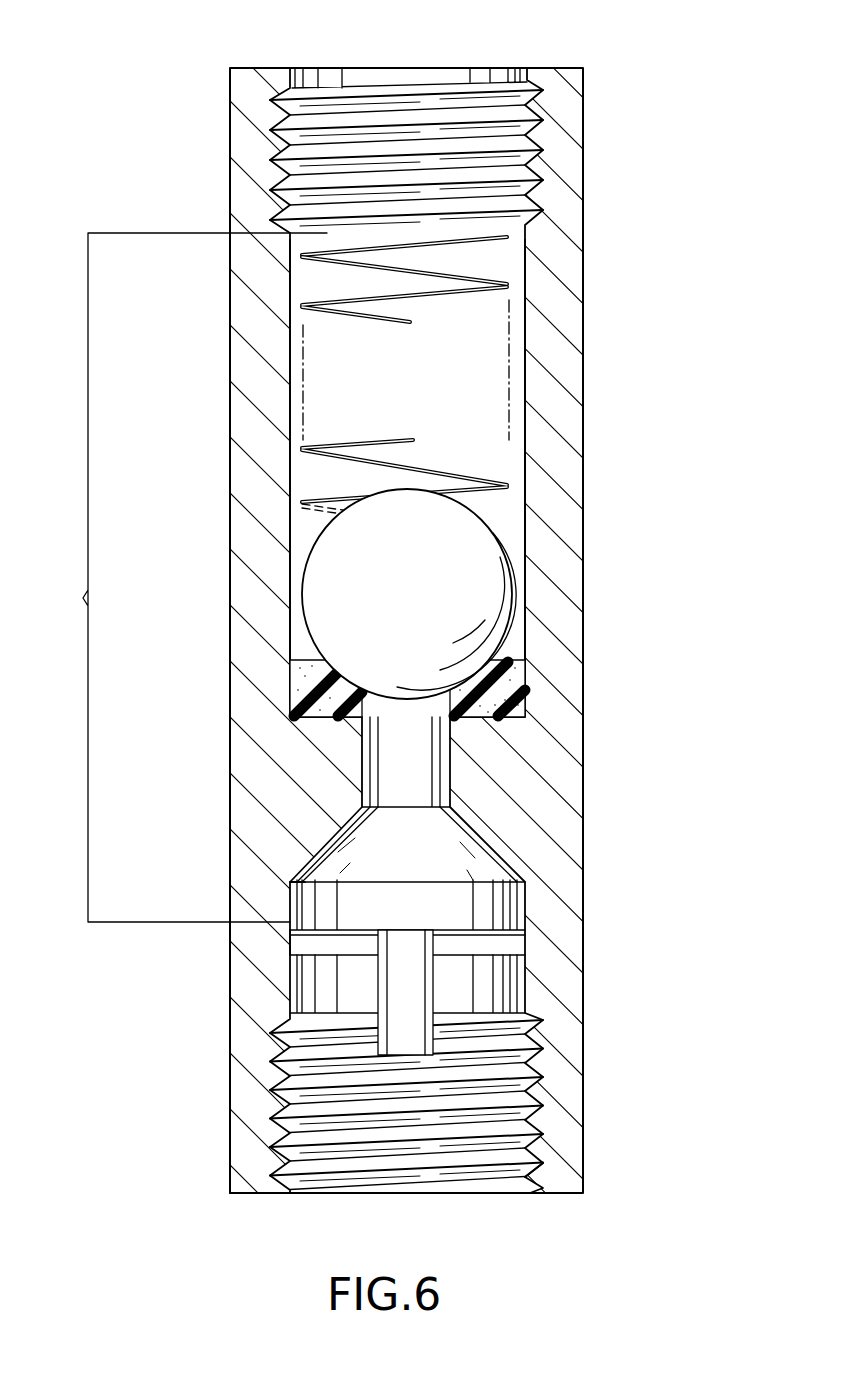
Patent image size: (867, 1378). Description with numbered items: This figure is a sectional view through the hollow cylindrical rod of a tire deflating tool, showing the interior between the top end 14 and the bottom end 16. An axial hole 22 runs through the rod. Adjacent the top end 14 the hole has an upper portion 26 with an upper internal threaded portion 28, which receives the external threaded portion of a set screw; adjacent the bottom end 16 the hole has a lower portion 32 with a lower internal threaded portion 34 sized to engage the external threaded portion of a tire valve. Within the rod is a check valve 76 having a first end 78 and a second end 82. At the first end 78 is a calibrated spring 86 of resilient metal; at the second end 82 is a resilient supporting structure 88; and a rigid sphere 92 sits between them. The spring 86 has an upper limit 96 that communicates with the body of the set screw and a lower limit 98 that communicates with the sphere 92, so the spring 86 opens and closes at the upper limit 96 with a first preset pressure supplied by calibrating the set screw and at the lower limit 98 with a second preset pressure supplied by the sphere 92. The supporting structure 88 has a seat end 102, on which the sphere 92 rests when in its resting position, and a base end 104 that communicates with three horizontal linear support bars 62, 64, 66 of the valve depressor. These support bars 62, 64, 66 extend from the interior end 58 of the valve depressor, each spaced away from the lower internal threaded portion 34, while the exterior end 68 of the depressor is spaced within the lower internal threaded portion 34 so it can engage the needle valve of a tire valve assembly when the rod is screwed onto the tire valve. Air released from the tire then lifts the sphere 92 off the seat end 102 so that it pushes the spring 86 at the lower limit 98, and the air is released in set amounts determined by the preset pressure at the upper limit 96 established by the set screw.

The top end 14 is at (583, 68).
The upper portion 26 is at (310, 72).
The upper internal threaded portion 28 is at (533, 153).
The upper limit 96 is at (507, 237).
The first end 78 is at (515, 257).
The calibrated spring 86 is at (420, 358).
The axial hole 22 is at (513, 508).
The lower limit 98 is at (302, 511).
The check valve 76 is at (305, 592).
The rigid sphere 92 is at (518, 598).
The seat end 102 is at (525, 697).
The resilient supporting structure 88 is at (480, 867).
The second end 82 is at (517, 930).
The base end 104 is at (290, 884).
The support bar 66 is at (520, 948).
The interior end 58 is at (296, 938).
The exterior end 68 is at (417, 985).
The support bar 62 is at (300, 942).
The support bar 64 is at (400, 940).
The lower internal threaded portion 34 is at (280, 1115).
The lower portion 32 is at (528, 1187).
The bottom end 16 is at (250, 1192).